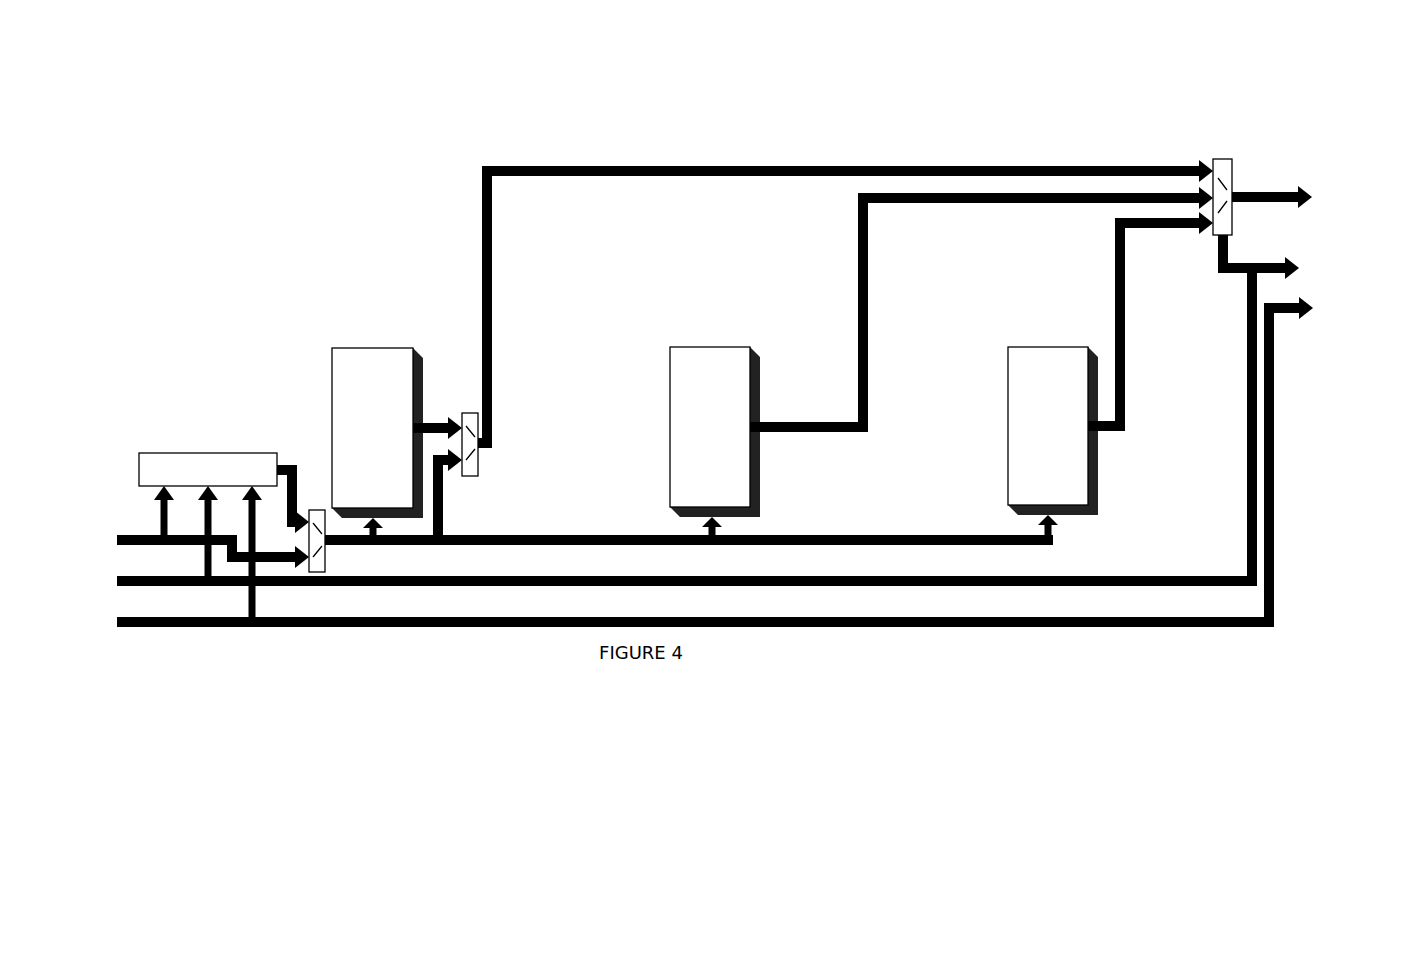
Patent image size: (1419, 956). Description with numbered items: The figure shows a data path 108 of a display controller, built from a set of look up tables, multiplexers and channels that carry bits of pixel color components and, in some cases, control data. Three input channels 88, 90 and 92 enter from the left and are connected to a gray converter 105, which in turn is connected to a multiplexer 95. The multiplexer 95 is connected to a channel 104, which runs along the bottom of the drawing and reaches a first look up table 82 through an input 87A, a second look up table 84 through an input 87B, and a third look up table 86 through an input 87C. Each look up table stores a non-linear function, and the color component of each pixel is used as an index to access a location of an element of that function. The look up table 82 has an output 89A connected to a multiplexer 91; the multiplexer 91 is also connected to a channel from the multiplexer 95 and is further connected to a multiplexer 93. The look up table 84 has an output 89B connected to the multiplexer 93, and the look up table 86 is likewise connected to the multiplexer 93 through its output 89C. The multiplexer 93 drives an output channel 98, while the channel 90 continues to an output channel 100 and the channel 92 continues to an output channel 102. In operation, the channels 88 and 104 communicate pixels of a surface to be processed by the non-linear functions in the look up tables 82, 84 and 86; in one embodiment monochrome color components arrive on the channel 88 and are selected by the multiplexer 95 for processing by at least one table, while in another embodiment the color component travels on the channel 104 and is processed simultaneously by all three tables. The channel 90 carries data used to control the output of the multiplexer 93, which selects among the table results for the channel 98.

The first look up table 82 is at (393, 348).
The second look up table 84 is at (731, 347).
The third look up table 86 is at (1048, 347).
The input 87A is at (380, 528).
The input 87B is at (718, 530).
The input 87C is at (1055, 527).
The channel 88 is at (117, 540).
The output 89A is at (445, 420).
The output 89B is at (790, 425).
The output 89C is at (1098, 440).
The channel 90 is at (117, 581).
The multiplexer 91 is at (482, 463).
The channel 92 is at (117, 622).
The multiplexer 93 is at (1228, 159).
The multiplexer 95 is at (318, 509).
The channel 98 is at (1313, 200).
The channel 100 is at (1313, 268).
The channel 102 is at (1315, 308).
The channel 104 is at (590, 535).
The gray converter 105 is at (190, 453).
The data path 108 is at (247, 148).